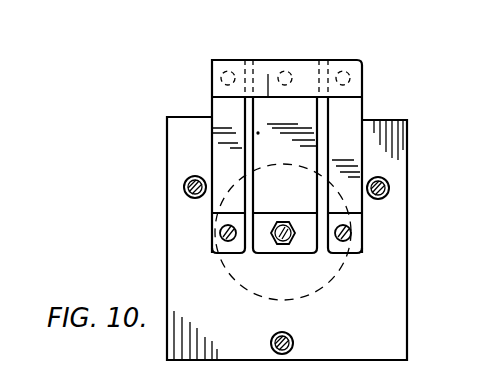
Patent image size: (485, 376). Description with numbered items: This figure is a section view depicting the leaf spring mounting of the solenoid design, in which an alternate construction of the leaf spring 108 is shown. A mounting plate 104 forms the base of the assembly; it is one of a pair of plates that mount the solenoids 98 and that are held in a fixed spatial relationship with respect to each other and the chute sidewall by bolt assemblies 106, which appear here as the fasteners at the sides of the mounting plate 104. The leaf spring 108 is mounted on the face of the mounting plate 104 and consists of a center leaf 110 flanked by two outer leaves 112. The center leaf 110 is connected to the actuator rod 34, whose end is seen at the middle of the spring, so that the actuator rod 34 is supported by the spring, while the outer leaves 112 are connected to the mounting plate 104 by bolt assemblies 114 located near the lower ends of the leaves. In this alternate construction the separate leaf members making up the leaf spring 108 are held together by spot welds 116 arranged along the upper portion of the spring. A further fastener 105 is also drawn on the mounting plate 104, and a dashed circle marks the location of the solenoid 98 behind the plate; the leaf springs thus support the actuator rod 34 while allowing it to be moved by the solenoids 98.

The actuator rod 34 is at (283, 245).
The Ledex solenoid 98 is at (317, 305).
The mounting plate 104 is at (167, 268).
The mounting screw 105 is at (291, 338).
The bolt assembly 106 is at (184, 189).
The leaf spring 108 is at (360, 56).
The center leaf 110 is at (258, 133).
The outer leaf 112 is at (212, 105).
The bolt assembly 114 is at (228, 272).
The spot weld 116 is at (331, 70).